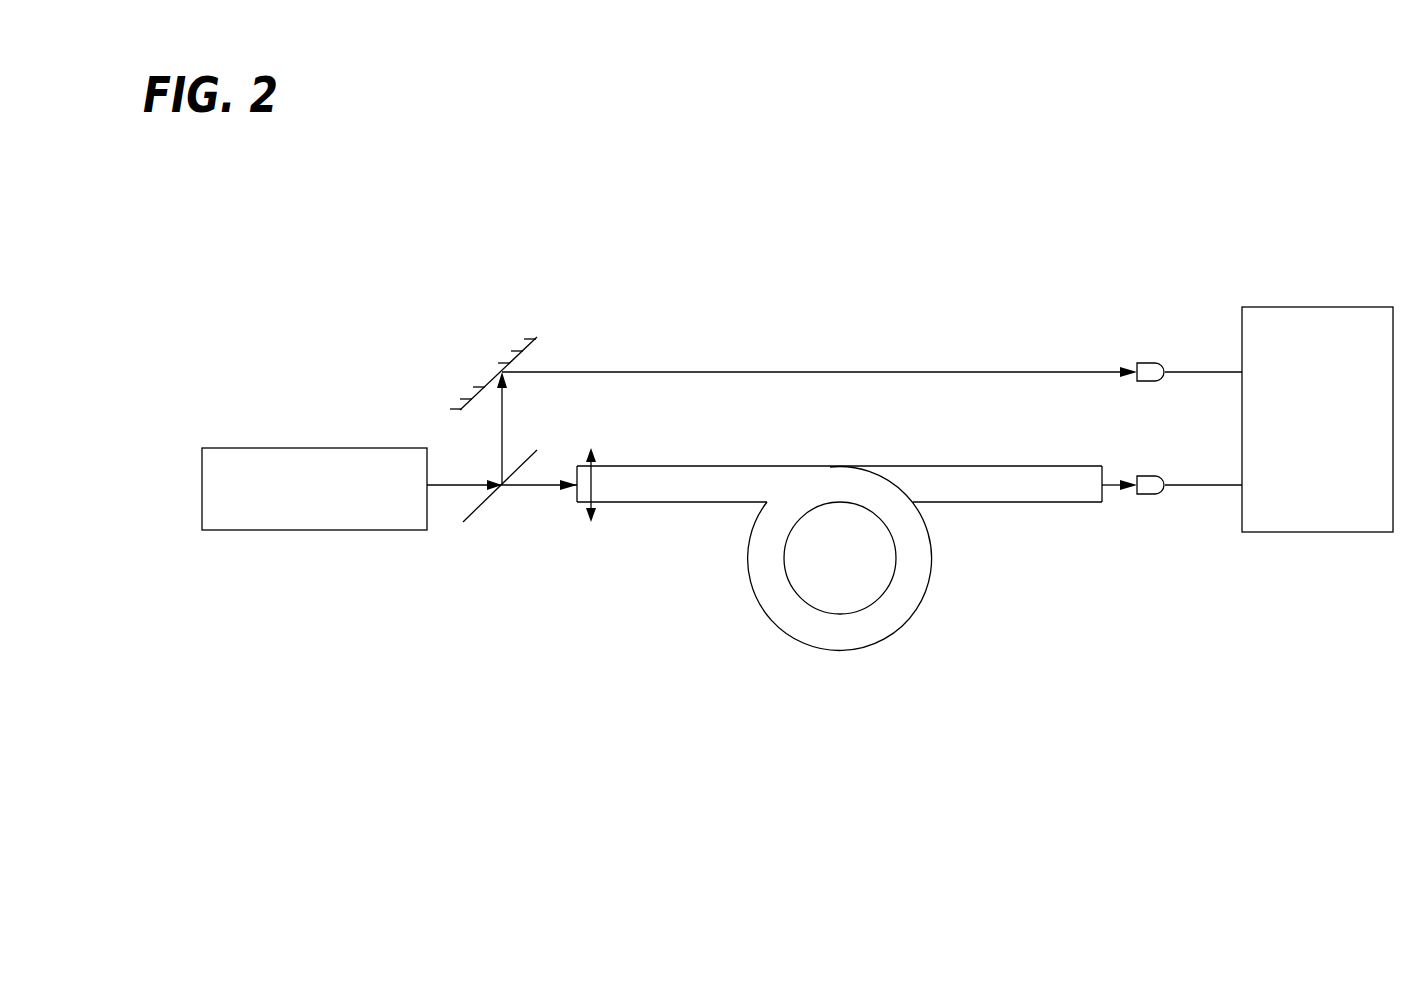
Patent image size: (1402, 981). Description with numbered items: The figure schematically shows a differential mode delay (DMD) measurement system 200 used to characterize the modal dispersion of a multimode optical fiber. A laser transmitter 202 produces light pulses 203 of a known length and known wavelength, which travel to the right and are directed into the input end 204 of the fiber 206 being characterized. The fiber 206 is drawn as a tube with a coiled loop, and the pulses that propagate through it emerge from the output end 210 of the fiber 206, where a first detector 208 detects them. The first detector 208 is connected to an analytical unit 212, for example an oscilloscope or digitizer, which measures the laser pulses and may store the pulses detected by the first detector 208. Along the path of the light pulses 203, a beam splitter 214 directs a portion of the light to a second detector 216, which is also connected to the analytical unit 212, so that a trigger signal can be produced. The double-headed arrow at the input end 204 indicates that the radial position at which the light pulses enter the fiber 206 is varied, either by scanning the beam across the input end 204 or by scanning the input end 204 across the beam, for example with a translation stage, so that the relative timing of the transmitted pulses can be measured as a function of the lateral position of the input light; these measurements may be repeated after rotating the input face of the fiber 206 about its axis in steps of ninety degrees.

The differential mode delay (DMD) measurement system 200 is at (370, 283).
The laser transmitter 202 is at (343, 531).
The light pulses 203 is at (455, 488).
The input end of the fiber 204 is at (577, 503).
The fiber 206 is at (767, 603).
The first detector 208 is at (1150, 495).
The output end of the fiber 210 is at (1106, 503).
The analytical unit 212 is at (1318, 533).
The beam splitter 214 is at (535, 453).
The second detector 216 is at (1150, 363).